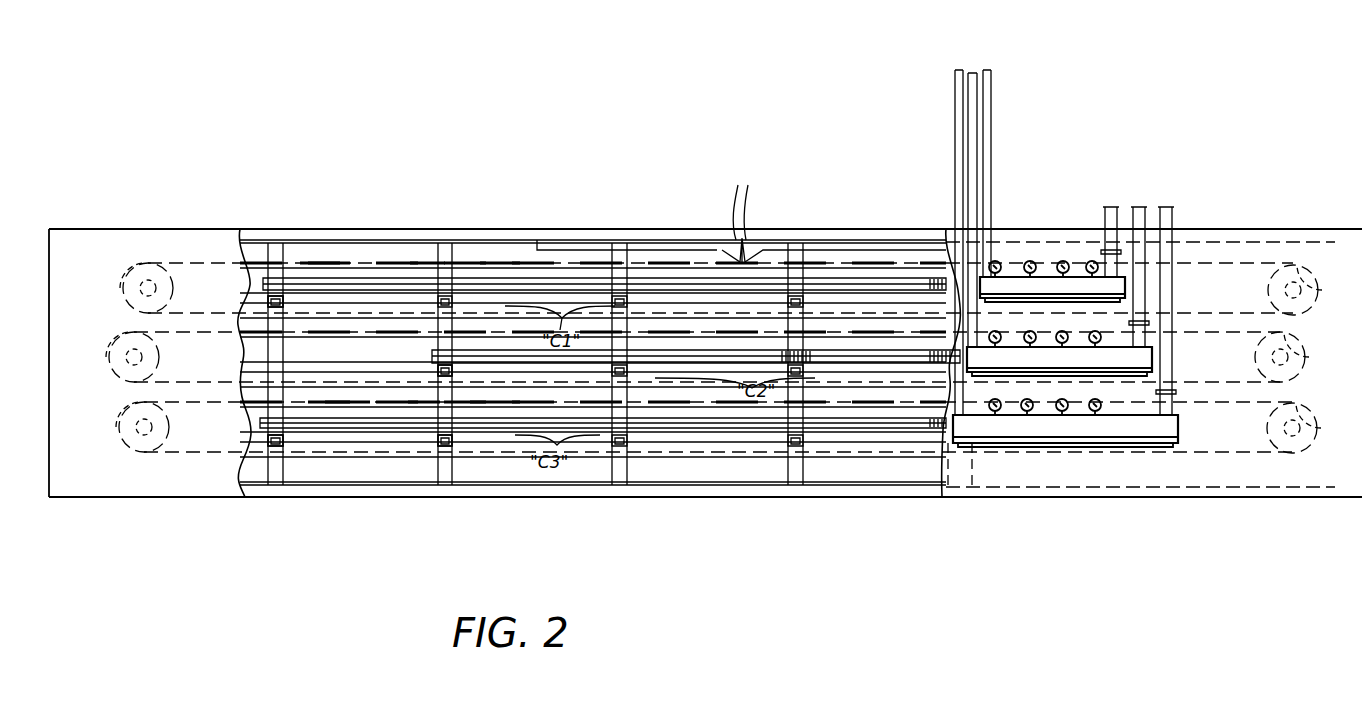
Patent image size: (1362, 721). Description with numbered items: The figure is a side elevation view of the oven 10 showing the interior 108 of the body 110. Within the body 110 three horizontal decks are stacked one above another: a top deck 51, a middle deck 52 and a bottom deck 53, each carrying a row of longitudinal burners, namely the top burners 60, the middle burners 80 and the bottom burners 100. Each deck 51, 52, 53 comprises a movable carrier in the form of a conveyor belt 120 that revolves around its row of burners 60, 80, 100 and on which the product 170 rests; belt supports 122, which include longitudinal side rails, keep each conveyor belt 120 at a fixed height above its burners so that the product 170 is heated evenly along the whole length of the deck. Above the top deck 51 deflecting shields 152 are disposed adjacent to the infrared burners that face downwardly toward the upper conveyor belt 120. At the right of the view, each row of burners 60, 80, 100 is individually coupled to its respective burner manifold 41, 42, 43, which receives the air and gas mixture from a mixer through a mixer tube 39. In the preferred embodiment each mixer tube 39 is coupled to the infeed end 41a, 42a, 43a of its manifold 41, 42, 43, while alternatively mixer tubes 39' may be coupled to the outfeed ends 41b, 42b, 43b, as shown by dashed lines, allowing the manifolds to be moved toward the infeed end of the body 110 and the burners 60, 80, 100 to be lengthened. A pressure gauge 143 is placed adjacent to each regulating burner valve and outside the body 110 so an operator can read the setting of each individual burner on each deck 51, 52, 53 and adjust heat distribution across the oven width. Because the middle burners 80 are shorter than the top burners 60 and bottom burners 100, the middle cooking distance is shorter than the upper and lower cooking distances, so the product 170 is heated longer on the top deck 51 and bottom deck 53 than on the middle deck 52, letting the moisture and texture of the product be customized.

The oven 10 is at (753, 580).
The mixer tube 39 is at (1138, 276).
The mixer tube 39' is at (1006, 217).
The burner manifold 41 is at (1110, 301).
The infeed end of manifold 41a is at (1128, 290).
The outfeed end of manifold 41b is at (980, 287).
The burner manifold 42 is at (1140, 374).
The infeed end of manifold 42a is at (1152, 360).
The outfeed end of manifold 42b is at (967, 355).
The burner manifold 43 is at (1120, 447).
The infeed end of manifold 43a is at (1180, 428).
The outfeed end of manifold 43b is at (953, 432).
The top deck 51 is at (116, 312).
The middle deck 52 is at (112, 380).
The bottom deck 53 is at (112, 450).
The burner 60 is at (372, 278).
The burner 80 is at (470, 358).
The burner 100 is at (260, 422).
The interior 108 is at (842, 478).
The body 110 is at (593, 498).
The conveyor belt 120 is at (200, 393).
The belt support 122 is at (437, 370).
The pressure gauge 143 is at (1087, 261).
The deflecting shield 152 is at (822, 243).
The product 170 is at (488, 262).